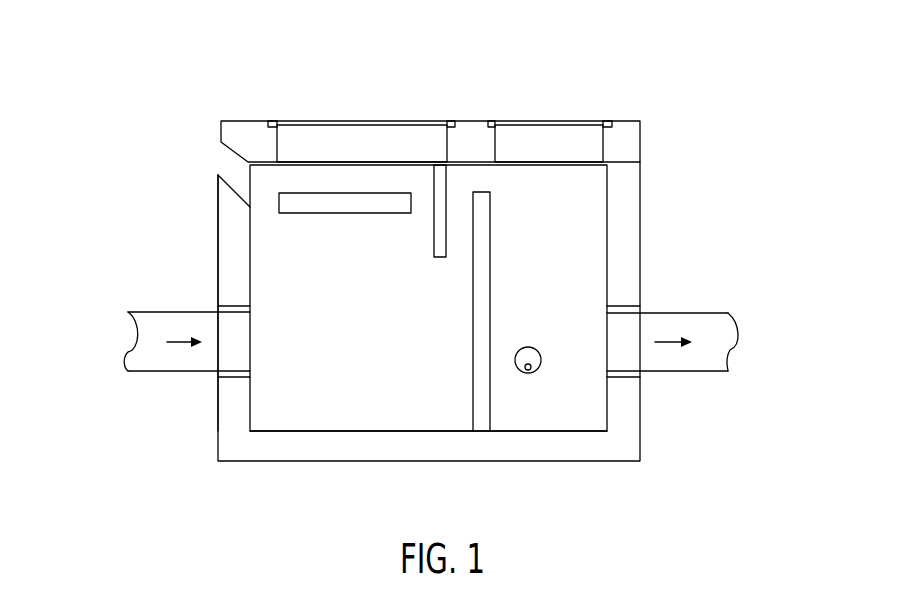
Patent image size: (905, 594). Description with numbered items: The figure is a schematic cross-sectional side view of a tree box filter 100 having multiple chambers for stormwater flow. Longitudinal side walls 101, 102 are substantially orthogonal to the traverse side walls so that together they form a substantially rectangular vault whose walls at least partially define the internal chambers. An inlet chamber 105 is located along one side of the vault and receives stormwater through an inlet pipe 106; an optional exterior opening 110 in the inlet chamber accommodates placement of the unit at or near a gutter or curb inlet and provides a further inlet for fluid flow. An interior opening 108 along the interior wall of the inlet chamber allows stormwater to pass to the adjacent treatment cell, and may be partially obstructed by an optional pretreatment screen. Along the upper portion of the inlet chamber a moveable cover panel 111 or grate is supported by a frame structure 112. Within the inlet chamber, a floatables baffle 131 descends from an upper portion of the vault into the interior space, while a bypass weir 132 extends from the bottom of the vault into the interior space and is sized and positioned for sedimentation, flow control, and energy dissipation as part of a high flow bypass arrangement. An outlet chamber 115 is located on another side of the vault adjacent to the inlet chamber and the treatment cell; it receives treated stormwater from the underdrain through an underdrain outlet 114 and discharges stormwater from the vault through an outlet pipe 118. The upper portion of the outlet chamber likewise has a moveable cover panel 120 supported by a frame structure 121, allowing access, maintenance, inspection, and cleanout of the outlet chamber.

The tree box filter 100 is at (749, 122).
The longitudinal side wall 101 is at (640, 208).
The longitudinal side wall 102 is at (218, 222).
The inlet chamber 105 is at (282, 400).
The inlet pipe 106 is at (128, 347).
The interior opening 108 is at (337, 213).
The exterior opening 110 is at (218, 157).
The cover panel 111 is at (343, 121).
The frame structure 112 is at (272, 120).
The underdrain outlet 114 is at (532, 348).
The outlet chamber 115 is at (580, 403).
The outlet pipe 118 is at (730, 347).
The cover panel 120 is at (538, 121).
The frame structure 121 is at (612, 121).
The floatables baffle 131 is at (446, 207).
The bypass weir 132 is at (490, 270).